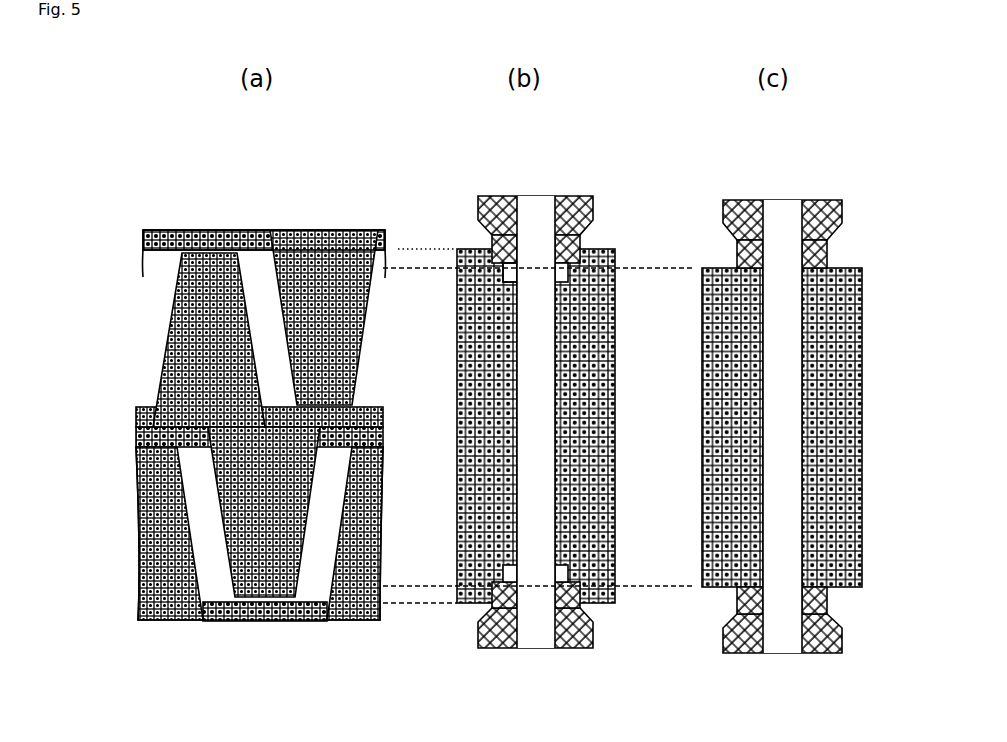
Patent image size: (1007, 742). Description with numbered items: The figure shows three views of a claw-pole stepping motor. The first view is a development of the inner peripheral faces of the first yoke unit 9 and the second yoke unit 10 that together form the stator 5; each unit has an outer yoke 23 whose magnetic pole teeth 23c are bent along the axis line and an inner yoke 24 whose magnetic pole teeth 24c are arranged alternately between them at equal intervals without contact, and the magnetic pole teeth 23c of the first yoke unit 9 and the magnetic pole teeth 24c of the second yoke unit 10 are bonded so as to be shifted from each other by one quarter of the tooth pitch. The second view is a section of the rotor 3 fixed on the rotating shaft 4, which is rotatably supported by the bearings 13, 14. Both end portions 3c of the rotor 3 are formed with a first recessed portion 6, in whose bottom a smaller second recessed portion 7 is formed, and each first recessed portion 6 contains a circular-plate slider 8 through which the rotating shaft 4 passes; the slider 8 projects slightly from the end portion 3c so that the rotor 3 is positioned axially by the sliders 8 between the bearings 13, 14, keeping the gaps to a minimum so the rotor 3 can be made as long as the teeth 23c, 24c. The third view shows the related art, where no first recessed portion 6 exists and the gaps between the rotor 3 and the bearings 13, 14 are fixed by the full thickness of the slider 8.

In FIG. 5B, the rotor 3 is at (555, 425).
In FIG. 5C, the rotor 3 is at (845, 275).
In FIG. 5B, the end portions of the rotor 3c is at (456, 248).
In FIG. 5B, the rotating shaft 4 is at (535, 637).
In FIG. 5A, the stator 5 is at (120, 258).
In FIG. 5B, the first recessed portion 6 is at (508, 250).
In FIG. 5B, the second recessed portion 7 is at (512, 276).
In FIG. 5B, the slider 8 is at (582, 243).
In FIG. 5C, the slider 8 is at (738, 257).
In FIG. 5A, the first yoke unit 9 is at (178, 226).
In FIG. 5A, the second yoke unit 10 is at (152, 628).
In FIG. 5B, the bearing 13 is at (573, 213).
In FIG. 5C, the bearing 13 is at (742, 213).
In FIG. 5B, the bearing 14 is at (572, 638).
In FIG. 5C, the bearing 14 is at (740, 630).
In FIG. 5A, the outer yoke 23 is at (138, 417).
In FIG. 5A, the magnetic pole teeth of the outer yoke 23c is at (182, 337).
In FIG. 5A, the inner yoke 24 is at (166, 244).
In FIG. 5A, the magnetic pole teeth of the inner yoke 24c is at (318, 243).